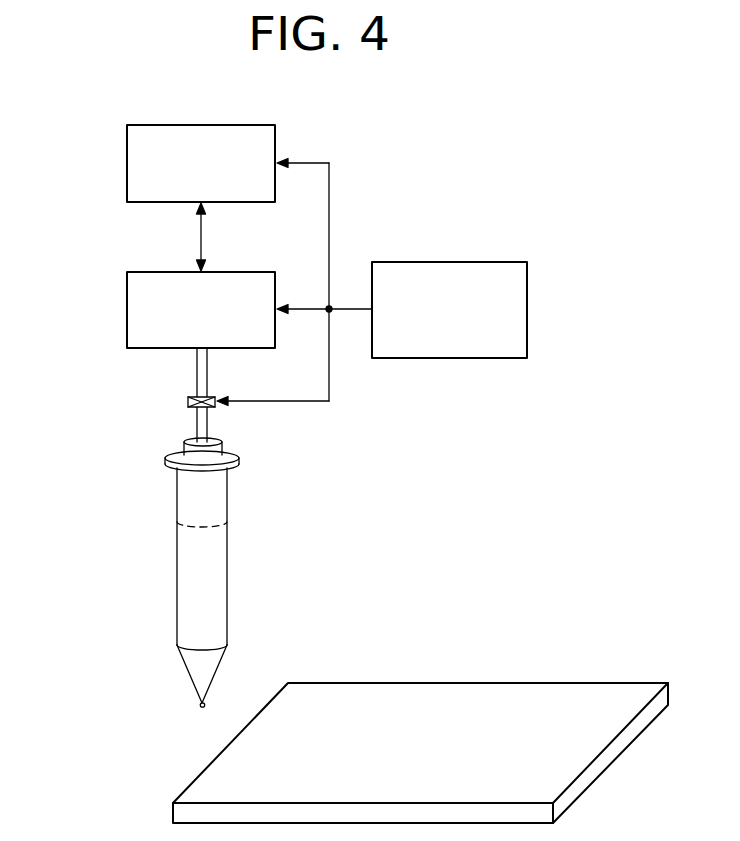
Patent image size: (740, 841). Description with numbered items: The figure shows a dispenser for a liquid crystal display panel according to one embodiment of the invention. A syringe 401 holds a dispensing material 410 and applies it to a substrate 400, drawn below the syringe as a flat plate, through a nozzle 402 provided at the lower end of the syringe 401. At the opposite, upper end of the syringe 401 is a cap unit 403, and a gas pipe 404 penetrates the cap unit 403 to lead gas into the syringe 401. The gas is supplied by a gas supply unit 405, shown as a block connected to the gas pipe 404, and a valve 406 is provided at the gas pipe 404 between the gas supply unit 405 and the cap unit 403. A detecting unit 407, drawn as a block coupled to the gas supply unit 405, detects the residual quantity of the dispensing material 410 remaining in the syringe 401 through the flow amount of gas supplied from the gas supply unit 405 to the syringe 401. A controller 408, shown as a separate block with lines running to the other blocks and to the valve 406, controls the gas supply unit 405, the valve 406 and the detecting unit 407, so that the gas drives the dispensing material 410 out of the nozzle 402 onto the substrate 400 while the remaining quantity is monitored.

The substrate 400 is at (560, 693).
The syringe 401 is at (139, 530).
The nozzle 402 is at (200, 705).
The cap unit 403 is at (165, 458).
The gas pipe 404 is at (186, 427).
The gas supply unit 405 is at (127, 322).
The valve 406 is at (188, 401).
The detecting unit 407 is at (127, 175).
The controller 408 is at (530, 308).
The dispensing material 410 is at (188, 570).